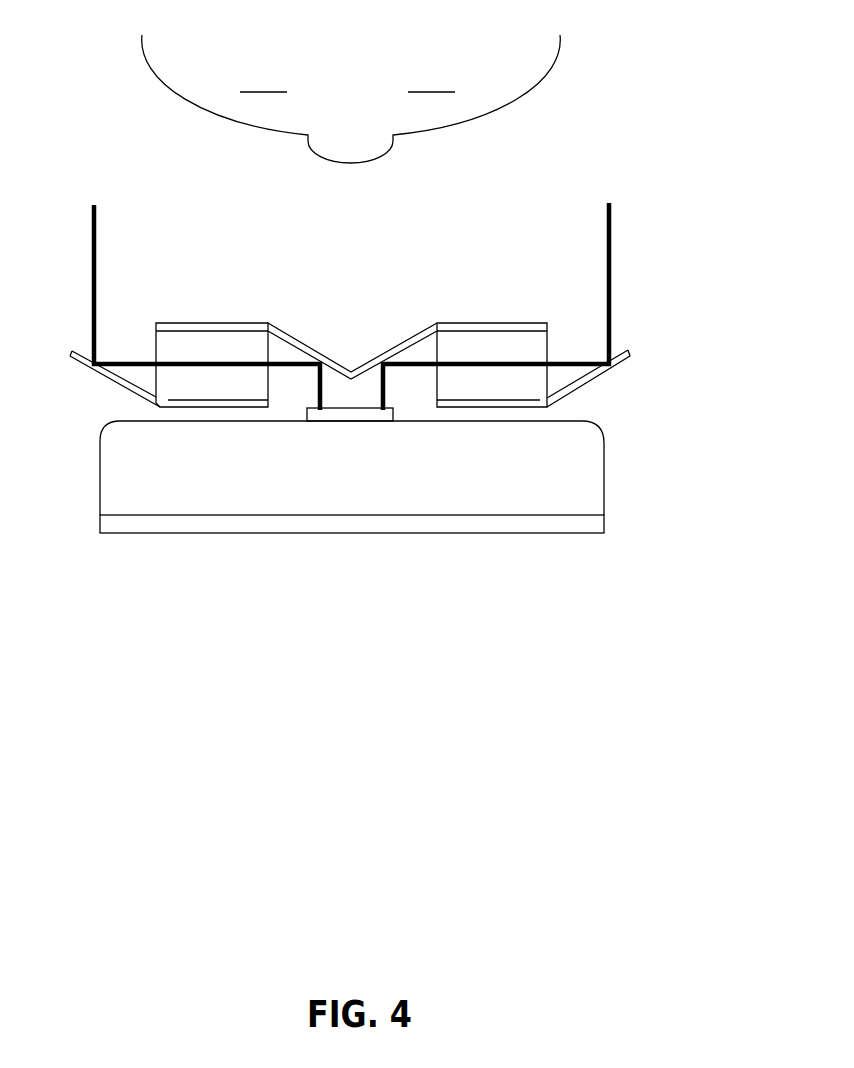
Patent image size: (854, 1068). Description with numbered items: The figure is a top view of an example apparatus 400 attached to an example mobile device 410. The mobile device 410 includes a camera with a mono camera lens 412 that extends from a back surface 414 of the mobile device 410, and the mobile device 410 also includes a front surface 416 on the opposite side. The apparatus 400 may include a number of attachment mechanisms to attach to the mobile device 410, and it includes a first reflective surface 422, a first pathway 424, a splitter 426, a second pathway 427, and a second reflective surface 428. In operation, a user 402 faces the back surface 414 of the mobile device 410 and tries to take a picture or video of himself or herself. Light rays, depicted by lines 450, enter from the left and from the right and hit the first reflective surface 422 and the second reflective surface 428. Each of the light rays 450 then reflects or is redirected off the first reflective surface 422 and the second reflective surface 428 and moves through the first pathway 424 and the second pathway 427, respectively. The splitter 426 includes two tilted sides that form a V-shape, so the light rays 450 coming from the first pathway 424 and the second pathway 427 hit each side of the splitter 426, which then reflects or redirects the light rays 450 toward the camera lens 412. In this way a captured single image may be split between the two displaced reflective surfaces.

The apparatus 400 is at (662, 386).
The user 402 is at (184, 72).
The mobile device 410 is at (660, 487).
The mono camera lens 412 is at (352, 407).
The back surface 414 is at (142, 422).
The front surface 416 is at (505, 533).
The first reflective surface 422 is at (82, 353).
The first pathway 424 is at (232, 352).
The splitter 426 is at (340, 362).
The second pathway 427 is at (515, 352).
The second reflective surface 428 is at (630, 352).
The light rays 450 is at (92, 234).